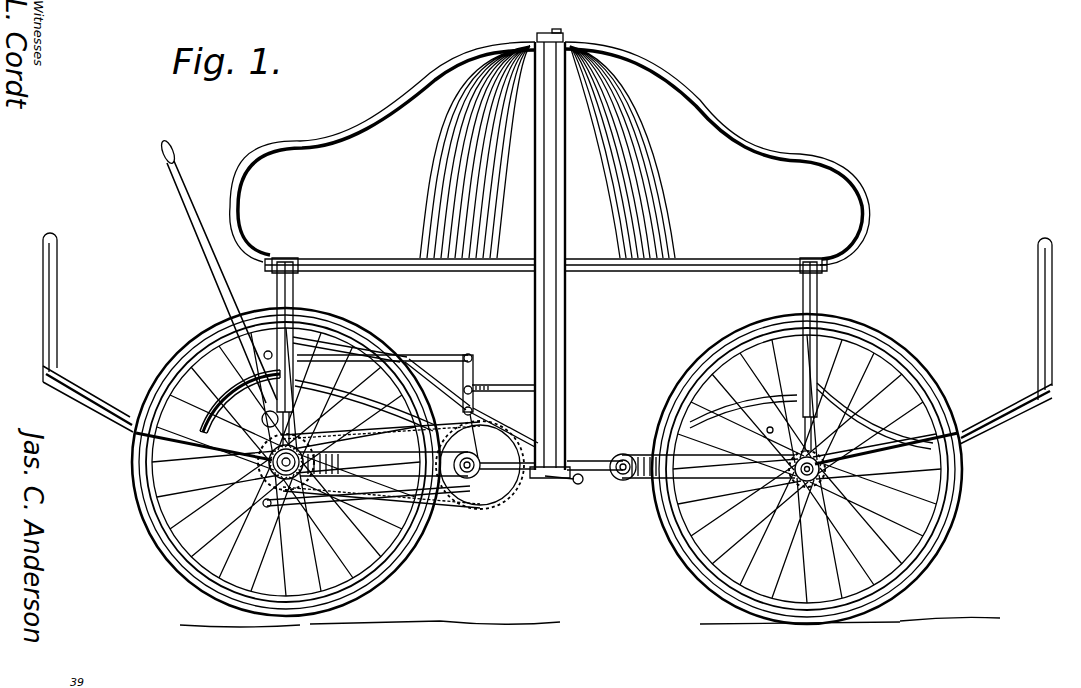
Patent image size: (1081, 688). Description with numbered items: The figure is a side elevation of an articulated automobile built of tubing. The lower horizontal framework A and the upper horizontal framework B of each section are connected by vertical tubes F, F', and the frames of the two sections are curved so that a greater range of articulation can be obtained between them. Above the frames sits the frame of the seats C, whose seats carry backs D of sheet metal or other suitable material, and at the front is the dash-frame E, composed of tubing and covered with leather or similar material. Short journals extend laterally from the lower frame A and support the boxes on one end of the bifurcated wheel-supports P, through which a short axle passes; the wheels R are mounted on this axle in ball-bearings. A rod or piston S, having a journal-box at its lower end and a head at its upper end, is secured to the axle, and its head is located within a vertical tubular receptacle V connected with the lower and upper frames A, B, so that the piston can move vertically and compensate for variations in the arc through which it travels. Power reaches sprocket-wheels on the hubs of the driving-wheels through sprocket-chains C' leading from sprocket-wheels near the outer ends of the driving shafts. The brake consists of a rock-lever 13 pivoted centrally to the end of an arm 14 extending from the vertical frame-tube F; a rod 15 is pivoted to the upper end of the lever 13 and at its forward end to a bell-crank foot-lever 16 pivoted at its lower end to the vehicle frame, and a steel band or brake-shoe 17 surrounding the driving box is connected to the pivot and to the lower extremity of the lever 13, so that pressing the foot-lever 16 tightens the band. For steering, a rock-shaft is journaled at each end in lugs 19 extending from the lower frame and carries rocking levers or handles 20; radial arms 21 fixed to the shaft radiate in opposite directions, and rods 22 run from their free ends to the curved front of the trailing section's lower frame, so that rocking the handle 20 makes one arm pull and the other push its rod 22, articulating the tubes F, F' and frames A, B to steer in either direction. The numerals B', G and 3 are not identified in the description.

The lower horizontal framework A is at (355, 400).
The upper horizontal framework B is at (546, 284).
The gear wheel B' is at (480, 489).
The frame of the seats C is at (550, 153).
The sprocket-chains C' is at (381, 478).
The backs D is at (537, 152).
The dash-frame E is at (547, 348).
The vertical tube F is at (514, 300).
The vertical tube F' is at (581, 300).
The central pole G is at (536, 36).
The bifurcated wheel-supports P is at (547, 466).
The wheels R is at (537, 466).
The tube or rod (piston) S is at (279, 420).
The vertical tubular receptacle V is at (295, 294).
The connecting rod 3 is at (477, 436).
The rock-lever 13 is at (474, 372).
The arm 14 is at (528, 389).
The rod 15 is at (440, 351).
The bell-crank foot-lever 16 is at (246, 394).
The steel band or brake-shoe 17 is at (492, 403).
The lugs 19 is at (270, 465).
The rocking levers or handles 20 is at (192, 222).
The radial arms 21 is at (265, 358).
The rods 22 is at (437, 384).